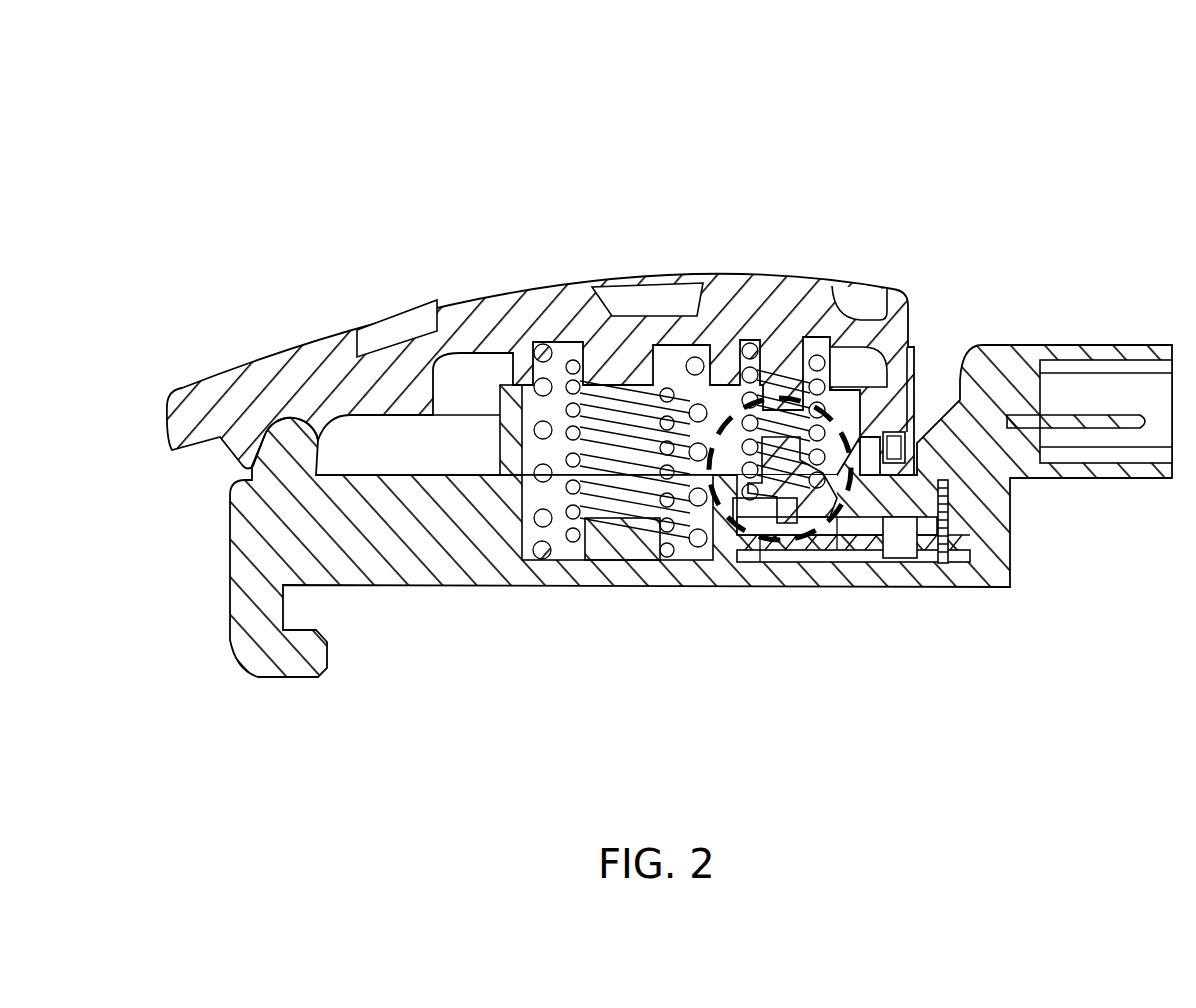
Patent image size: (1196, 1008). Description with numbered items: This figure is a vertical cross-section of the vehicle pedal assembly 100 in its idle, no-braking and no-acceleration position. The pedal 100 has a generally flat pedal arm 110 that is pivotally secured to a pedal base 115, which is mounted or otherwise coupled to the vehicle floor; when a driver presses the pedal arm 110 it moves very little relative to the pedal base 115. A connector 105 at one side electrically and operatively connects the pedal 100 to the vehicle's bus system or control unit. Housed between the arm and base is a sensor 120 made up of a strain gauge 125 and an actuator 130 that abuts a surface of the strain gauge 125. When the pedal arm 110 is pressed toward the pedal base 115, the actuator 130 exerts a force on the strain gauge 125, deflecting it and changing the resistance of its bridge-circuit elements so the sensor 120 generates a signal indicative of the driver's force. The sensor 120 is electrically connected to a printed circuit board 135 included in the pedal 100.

The vehicle pedal assembly 100 is at (669, 389).
The connector 105 is at (1033, 345).
The pedal arm 110 is at (544, 280).
The pedal base 115 is at (436, 587).
The sensor 120 is at (740, 520).
The strain gauge 125 is at (812, 535).
The actuator 130 is at (789, 428).
The printed circuit board 135 is at (877, 540).